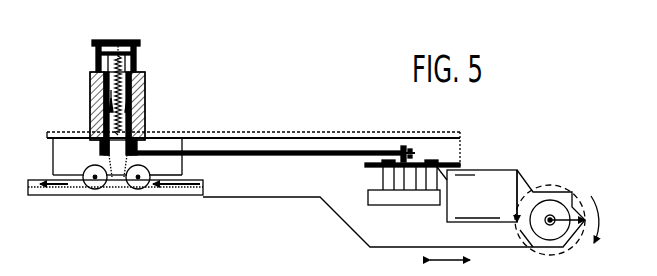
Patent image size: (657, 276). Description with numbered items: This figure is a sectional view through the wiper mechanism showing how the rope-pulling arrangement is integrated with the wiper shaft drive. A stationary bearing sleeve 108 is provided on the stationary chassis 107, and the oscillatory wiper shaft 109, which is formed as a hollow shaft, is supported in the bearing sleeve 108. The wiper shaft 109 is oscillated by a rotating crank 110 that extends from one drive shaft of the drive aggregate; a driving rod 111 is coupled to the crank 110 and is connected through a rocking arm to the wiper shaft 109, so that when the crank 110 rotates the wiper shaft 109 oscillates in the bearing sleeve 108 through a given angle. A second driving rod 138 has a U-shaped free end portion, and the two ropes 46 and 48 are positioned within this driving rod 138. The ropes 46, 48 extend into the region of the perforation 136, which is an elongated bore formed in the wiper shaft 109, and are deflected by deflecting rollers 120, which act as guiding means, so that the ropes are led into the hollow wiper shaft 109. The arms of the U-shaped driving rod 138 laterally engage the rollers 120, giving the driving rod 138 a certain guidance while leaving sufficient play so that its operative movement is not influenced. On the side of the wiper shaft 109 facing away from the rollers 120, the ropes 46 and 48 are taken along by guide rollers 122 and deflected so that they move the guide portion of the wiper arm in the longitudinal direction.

The guide rollers 122 is at (118, 43).
The perforation 136 is at (120, 72).
The wiper shaft 109 is at (140, 78).
The bearing sleeve 108 is at (140, 110).
The chassis 107 is at (273, 133).
The driving rod 111 is at (235, 152).
The crank 110 is at (410, 152).
The driving rod 138 is at (337, 217).
The deflecting rollers 120 is at (138, 179).
The rope 48 is at (55, 197).
The rope 46 is at (167, 197).